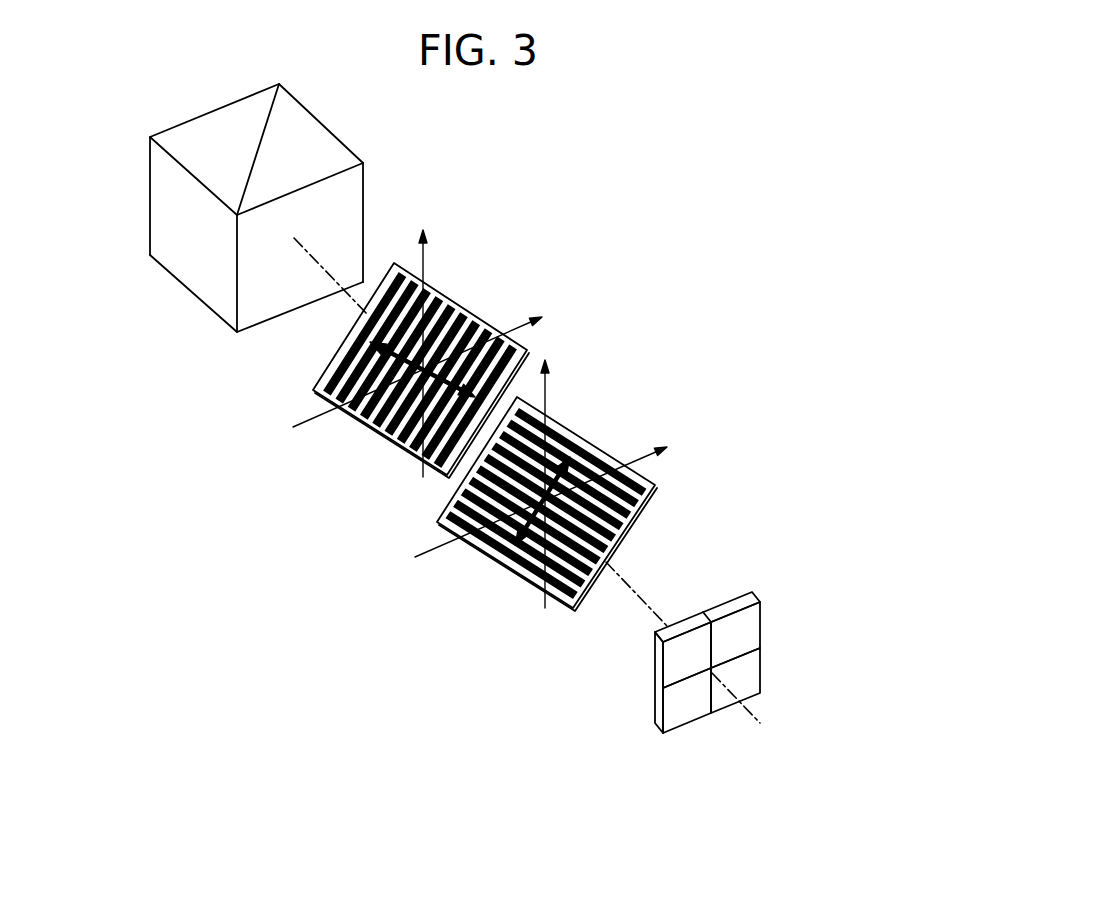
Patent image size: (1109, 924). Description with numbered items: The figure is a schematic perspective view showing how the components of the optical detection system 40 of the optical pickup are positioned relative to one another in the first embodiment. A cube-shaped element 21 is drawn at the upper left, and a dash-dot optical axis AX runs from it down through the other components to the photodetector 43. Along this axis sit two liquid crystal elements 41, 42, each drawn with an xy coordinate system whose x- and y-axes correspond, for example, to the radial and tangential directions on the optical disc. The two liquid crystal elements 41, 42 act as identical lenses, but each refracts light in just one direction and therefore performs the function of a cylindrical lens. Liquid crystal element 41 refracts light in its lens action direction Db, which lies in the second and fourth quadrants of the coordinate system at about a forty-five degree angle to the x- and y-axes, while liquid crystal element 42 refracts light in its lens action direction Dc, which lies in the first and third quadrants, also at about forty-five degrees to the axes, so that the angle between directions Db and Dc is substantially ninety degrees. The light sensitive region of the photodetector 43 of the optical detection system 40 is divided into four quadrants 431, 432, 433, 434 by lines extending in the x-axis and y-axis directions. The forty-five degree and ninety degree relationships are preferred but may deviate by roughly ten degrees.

The polarizing beam splitter (prism) 21 is at (198, 260).
The optical detection system 40 is at (574, 506).
The liquid crystal element 41 is at (377, 432).
The liquid crystal element 42 is at (488, 548).
The photodetector 43 is at (706, 709).
The quadrant 431 is at (753, 630).
The quadrant 432 is at (675, 647).
The quadrant 433 is at (682, 718).
The quadrant 434 is at (810, 713).
The lens action direction Db is at (373, 343).
The lens action direction Dc is at (575, 446).
The optical axis AX is at (634, 597).